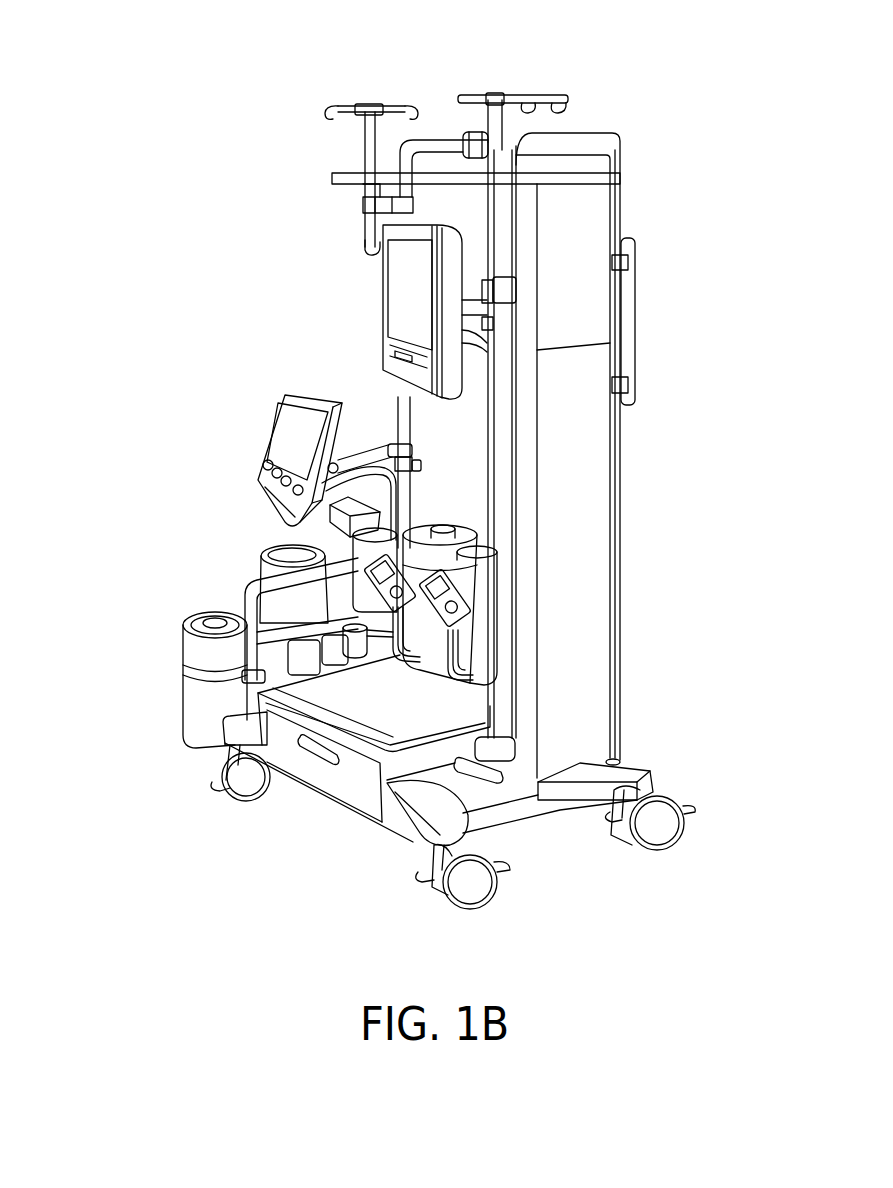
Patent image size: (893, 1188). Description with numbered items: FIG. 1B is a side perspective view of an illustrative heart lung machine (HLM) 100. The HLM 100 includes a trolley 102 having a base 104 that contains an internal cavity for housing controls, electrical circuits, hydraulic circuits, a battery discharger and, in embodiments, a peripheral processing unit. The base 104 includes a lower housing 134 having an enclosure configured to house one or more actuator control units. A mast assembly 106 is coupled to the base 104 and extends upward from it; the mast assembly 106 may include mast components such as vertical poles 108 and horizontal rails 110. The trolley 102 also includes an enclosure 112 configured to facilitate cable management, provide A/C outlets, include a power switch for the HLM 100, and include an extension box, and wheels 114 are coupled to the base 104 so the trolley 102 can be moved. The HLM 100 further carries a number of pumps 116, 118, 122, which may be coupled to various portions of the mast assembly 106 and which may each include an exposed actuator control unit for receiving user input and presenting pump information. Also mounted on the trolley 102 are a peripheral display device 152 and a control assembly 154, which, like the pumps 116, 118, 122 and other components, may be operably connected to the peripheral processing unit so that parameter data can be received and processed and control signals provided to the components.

The heart lung machine 100 is at (397, 493).
The trolley 102 is at (515, 435).
The base 104 is at (453, 805).
The mast assembly 106 is at (510, 439).
The vertical pole 108 is at (528, 451).
The horizontal rail 110 is at (444, 127).
The enclosure 112 is at (612, 481).
The wheel 114 is at (453, 850).
The pump 116 is at (182, 680).
The pump 118 is at (293, 517).
The pump 122 is at (440, 582).
The lower housing 134 is at (374, 770).
The peripheral display device 152 is at (405, 312).
The control assembly 154 is at (286, 467).